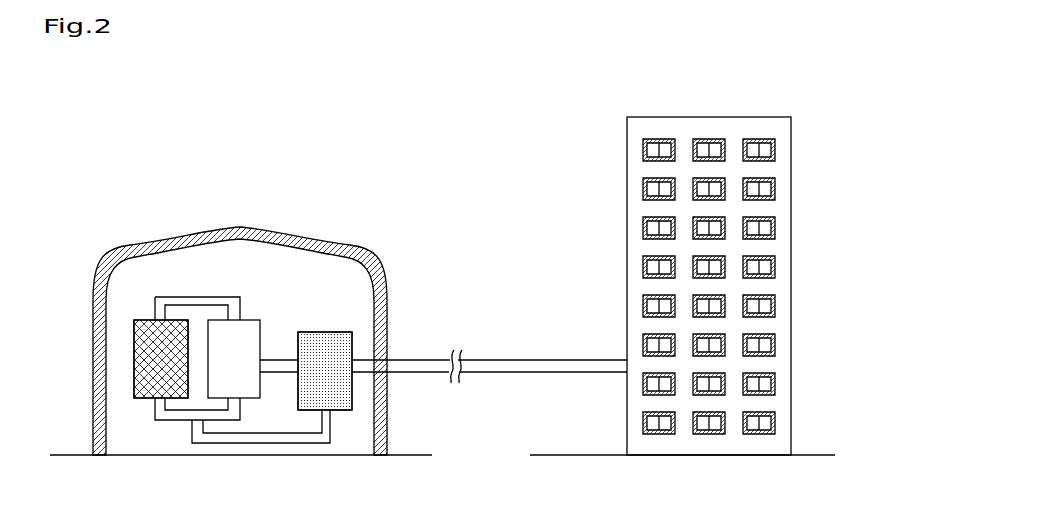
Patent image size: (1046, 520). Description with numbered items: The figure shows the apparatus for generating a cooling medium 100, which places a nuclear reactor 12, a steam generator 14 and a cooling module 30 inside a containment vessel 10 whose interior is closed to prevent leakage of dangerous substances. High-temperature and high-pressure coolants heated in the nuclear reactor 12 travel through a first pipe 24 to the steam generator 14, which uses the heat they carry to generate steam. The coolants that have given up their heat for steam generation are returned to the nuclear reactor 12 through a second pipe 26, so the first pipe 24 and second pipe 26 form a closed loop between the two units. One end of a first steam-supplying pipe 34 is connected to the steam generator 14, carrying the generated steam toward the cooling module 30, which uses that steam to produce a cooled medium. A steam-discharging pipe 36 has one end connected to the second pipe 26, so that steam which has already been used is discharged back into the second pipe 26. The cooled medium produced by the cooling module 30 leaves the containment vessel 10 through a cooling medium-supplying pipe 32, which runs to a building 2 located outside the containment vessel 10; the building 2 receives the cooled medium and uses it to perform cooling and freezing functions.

The building 2 is at (757, 117).
The apparatus for generating a cooling medium 100 is at (112, 243).
The containment vessel 10 is at (236, 230).
The nuclear reactor 12 is at (140, 320).
The steam generator 14 is at (245, 320).
The first pipe 24 is at (197, 297).
The second pipe 26 is at (175, 416).
The cooling module 30 is at (335, 332).
The cooling medium-supplying pipe 32 is at (415, 360).
The first steam-supplying pipe 34 is at (278, 358).
The steam-discharging pipe 36 is at (260, 436).